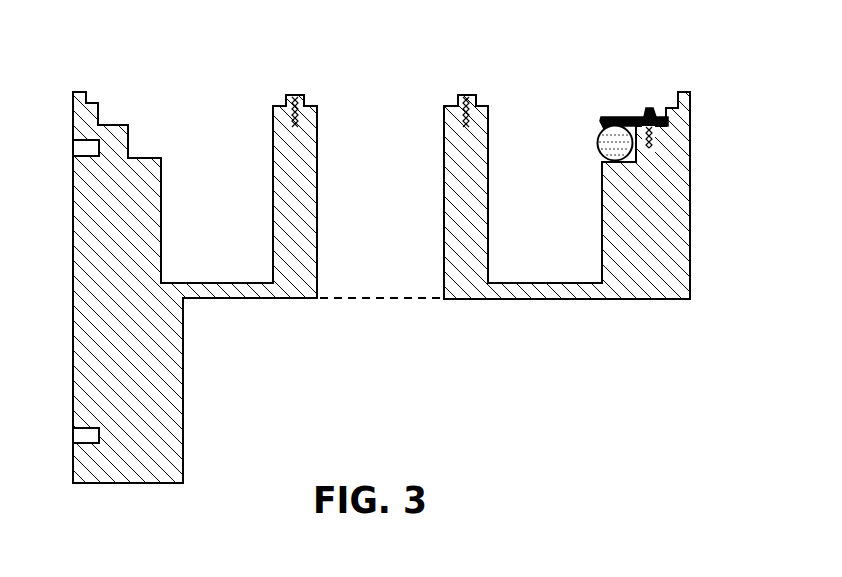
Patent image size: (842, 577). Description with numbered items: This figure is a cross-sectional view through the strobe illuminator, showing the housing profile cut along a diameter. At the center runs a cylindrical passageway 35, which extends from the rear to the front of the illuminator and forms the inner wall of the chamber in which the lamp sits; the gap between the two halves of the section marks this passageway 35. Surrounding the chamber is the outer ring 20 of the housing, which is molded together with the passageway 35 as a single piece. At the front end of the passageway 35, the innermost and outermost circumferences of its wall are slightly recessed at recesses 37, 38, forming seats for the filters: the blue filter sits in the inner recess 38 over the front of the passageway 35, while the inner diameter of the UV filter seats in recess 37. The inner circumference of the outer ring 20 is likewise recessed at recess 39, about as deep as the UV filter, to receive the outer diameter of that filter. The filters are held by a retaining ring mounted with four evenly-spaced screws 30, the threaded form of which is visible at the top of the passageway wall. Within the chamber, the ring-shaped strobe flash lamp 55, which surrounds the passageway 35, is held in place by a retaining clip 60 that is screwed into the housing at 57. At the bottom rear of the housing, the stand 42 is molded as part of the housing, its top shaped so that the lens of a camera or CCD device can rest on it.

The outer ring 20 is at (73, 100).
The screws 30 is at (290, 95).
The cylindrical passageway 35 is at (397, 232).
The recess 37 is at (485, 97).
The recess 38 is at (302, 165).
The recess 39 is at (87, 102).
The stand 42 is at (170, 386).
The ring-shaped strobe flash lamp 55 is at (598, 140).
The screw location 57 is at (646, 108).
The retaining clip 60 is at (623, 123).